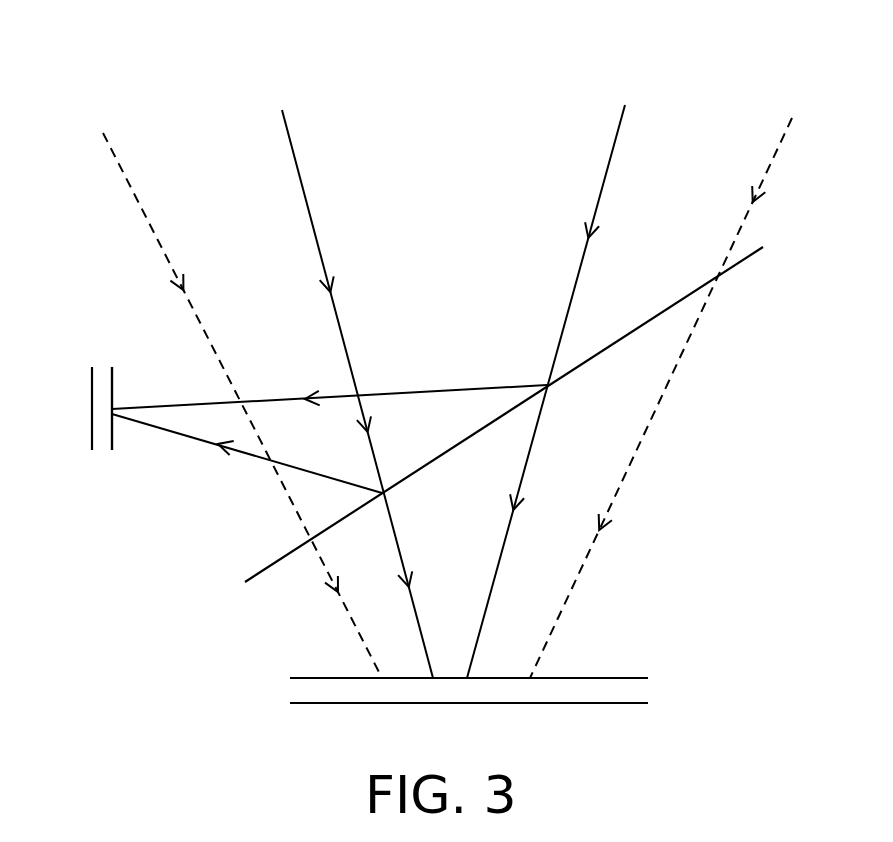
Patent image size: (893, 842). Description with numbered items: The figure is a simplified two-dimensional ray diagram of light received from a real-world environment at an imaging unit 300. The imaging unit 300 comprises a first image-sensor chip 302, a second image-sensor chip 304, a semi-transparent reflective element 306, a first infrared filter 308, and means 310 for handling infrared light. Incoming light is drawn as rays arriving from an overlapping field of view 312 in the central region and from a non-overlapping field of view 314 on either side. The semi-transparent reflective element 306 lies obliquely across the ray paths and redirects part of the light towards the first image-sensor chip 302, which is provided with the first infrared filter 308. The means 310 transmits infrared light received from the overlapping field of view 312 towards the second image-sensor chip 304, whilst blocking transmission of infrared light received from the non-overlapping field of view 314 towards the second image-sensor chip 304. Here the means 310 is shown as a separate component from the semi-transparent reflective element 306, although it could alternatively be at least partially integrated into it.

The imaging unit 300 is at (110, 665).
The first image-sensor chip 302 is at (88, 372).
The second image-sensor chip 304 is at (648, 703).
The semi-transparent reflective element 306 is at (739, 262).
The first infrared filter 308 is at (111, 374).
The means for transmitting infrared light 310 is at (646, 678).
The overlapping field of view 312 is at (627, 77).
The non-overlapping field of view 314 is at (272, 76).